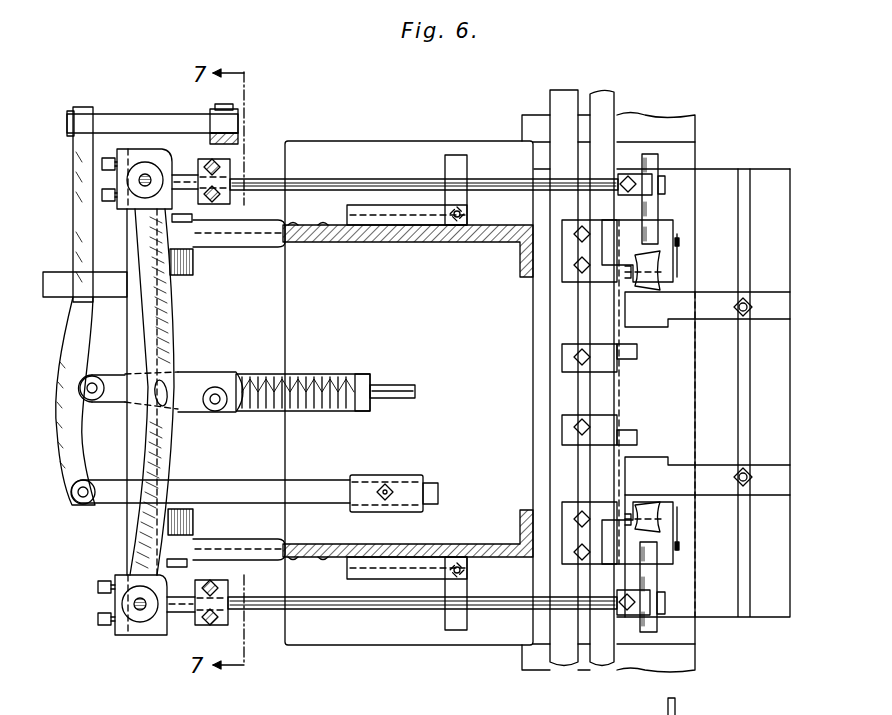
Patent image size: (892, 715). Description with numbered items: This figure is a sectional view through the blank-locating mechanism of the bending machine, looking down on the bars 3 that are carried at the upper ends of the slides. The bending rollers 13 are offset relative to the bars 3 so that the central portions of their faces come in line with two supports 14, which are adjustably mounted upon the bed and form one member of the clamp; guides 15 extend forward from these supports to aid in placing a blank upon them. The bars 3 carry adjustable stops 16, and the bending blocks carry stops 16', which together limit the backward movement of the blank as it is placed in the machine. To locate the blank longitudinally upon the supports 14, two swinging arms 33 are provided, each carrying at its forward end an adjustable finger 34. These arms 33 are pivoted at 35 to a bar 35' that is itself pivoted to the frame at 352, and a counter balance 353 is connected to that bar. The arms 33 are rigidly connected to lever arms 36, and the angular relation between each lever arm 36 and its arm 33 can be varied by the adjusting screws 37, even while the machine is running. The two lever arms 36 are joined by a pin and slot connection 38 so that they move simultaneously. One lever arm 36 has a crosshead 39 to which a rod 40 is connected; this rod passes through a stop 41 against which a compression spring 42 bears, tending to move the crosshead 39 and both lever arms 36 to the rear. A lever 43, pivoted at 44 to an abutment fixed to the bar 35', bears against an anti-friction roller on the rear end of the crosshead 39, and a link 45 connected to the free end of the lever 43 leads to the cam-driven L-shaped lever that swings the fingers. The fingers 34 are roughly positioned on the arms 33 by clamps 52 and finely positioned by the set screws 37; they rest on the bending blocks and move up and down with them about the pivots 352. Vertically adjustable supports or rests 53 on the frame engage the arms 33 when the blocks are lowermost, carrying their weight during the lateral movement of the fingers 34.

The bars 3 is at (602, 664).
The bending rollers 13 is at (645, 272).
The supports 14 is at (655, 462).
The guides 15 is at (770, 457).
The adjustable stops 16 is at (603, 392).
The stops 16' is at (647, 392).
The swinging arms 33 is at (365, 180).
The finger 34 is at (655, 228).
The pivot 35 is at (168, 384).
The bar 35' is at (124, 392).
The pivot 352 is at (226, 390).
The counter balance 353 is at (255, 467).
The lever arms 36 is at (170, 347).
The adjusting screws 37 is at (102, 193).
The pin and slot connection 38 is at (150, 402).
The crosshead 39 is at (198, 390).
The rod 40 is at (398, 387).
The stop 41 is at (368, 372).
The compression spring 42 is at (315, 375).
The lever 43 is at (72, 345).
The pivot 44 is at (72, 490).
The link 45 is at (110, 118).
The clamps 52 is at (636, 178).
The supports or rests 53 is at (452, 160).